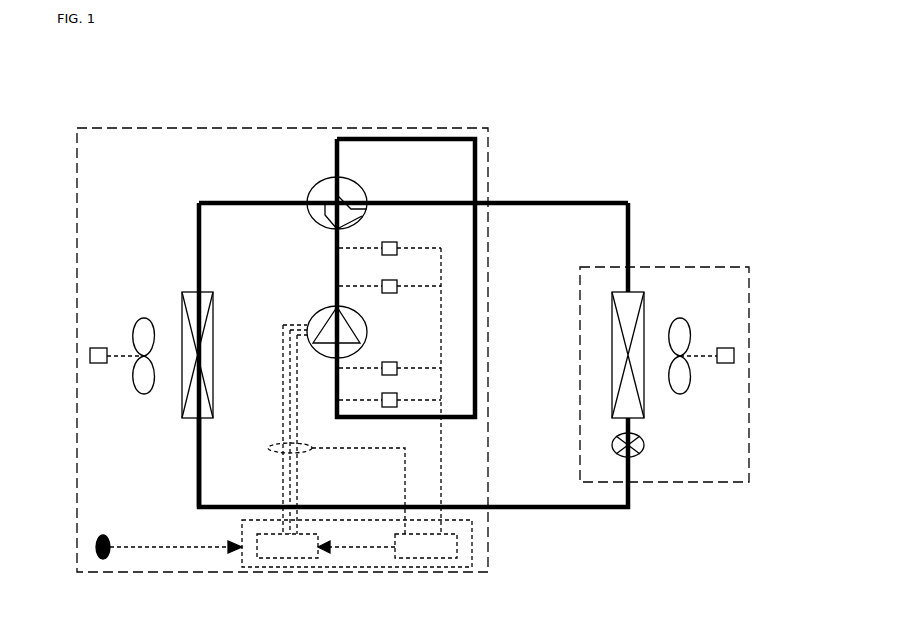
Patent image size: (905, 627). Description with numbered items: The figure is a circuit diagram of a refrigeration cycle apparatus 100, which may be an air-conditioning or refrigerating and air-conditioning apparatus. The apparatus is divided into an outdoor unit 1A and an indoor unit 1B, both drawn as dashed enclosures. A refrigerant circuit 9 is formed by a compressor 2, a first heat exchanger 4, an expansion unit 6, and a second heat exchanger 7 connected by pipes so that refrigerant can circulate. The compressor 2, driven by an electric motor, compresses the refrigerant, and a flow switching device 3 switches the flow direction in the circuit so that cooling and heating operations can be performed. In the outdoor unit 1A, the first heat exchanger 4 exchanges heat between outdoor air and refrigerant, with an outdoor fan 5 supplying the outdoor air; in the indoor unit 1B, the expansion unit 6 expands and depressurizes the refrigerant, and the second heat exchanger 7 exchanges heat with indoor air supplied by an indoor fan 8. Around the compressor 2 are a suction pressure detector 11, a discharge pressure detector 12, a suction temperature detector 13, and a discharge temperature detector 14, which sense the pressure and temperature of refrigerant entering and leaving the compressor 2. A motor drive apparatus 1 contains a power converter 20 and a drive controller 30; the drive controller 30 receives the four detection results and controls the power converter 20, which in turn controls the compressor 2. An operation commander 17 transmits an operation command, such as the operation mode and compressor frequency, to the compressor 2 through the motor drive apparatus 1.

The motor drive apparatus 1 is at (241, 531).
The outdoor unit 1A is at (338, 128).
The indoor unit 1B is at (676, 267).
The compressor 2 is at (313, 320).
The flow switching device 3 is at (318, 188).
The first heat exchanger 4 is at (182, 302).
The outdoor fan 5 is at (142, 394).
The expansion unit 6 is at (641, 452).
The second heat exchanger 7 is at (644, 326).
The indoor fan 8 is at (684, 396).
The refrigerant circuit 9 is at (589, 203).
The suction pressure detector 11 is at (398, 397).
The discharge pressure detector 12 is at (398, 282).
The suction temperature detector 13 is at (398, 364).
The discharge temperature detector 14 is at (398, 244).
The operation commander 17 is at (108, 537).
The power converter 20 is at (284, 560).
The drive controller 30 is at (430, 560).
The refrigeration cycle apparatus 100 is at (520, 125).